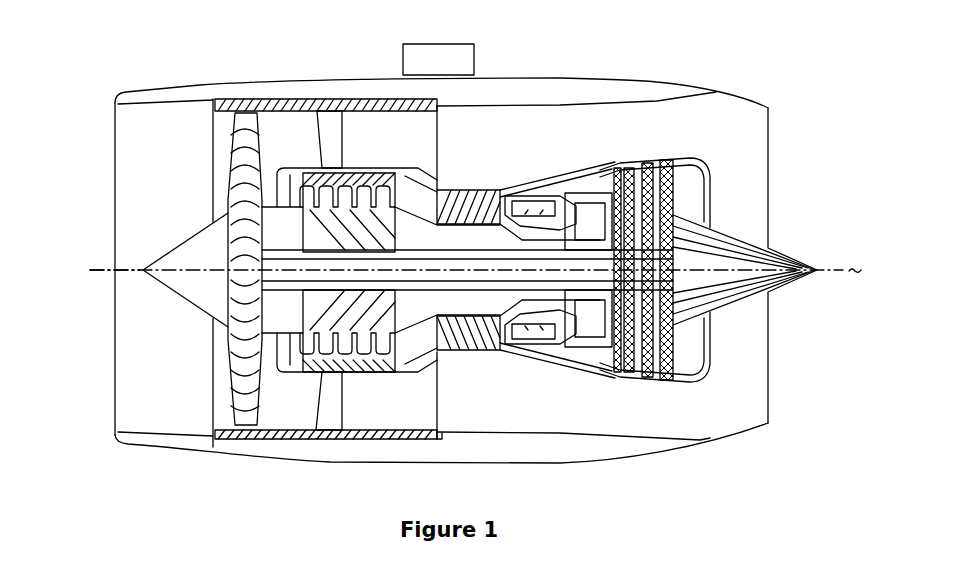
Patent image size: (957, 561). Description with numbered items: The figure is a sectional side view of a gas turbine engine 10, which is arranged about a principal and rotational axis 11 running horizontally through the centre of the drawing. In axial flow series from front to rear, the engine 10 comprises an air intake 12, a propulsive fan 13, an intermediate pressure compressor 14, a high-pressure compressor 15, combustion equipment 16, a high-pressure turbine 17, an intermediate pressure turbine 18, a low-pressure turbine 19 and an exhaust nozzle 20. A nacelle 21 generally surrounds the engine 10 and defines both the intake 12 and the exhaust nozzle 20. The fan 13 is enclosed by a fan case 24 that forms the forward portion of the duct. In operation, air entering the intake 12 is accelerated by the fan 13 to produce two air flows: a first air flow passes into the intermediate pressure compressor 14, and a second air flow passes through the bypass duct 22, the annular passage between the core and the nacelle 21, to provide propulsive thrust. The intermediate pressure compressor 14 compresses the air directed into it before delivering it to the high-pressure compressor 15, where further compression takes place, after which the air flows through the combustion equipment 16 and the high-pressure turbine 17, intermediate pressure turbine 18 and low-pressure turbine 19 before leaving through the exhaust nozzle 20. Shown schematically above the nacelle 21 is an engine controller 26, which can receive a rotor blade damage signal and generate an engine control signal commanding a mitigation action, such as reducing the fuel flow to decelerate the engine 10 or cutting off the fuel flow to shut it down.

The gas turbine engine 10 is at (105, 137).
The principal and rotational axis 11 is at (106, 270).
The air intake 12 is at (190, 108).
The propulsive fan 13 is at (234, 392).
The intermediate pressure compressor 14 is at (350, 356).
The high-pressure compressor 15 is at (462, 190).
The combustion equipment 16 is at (498, 358).
The high-pressure turbine 17 is at (575, 360).
The intermediate pressure turbine 18 is at (585, 180).
The low-pressure turbine 19 is at (598, 366).
The exhaust nozzle 20 is at (768, 405).
The nacelle 21 is at (500, 95).
The bypass duct 22 is at (349, 270).
The fan case 24 is at (288, 108).
The engine controller 26 is at (438, 59).